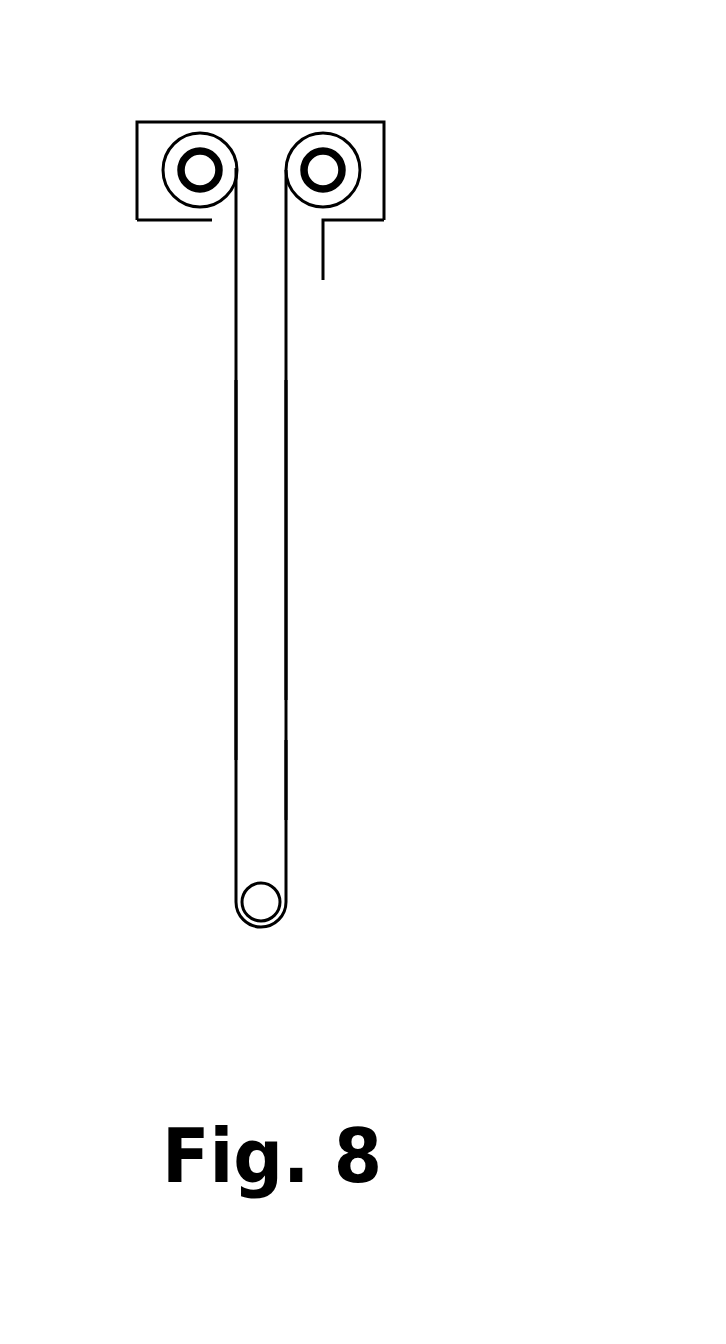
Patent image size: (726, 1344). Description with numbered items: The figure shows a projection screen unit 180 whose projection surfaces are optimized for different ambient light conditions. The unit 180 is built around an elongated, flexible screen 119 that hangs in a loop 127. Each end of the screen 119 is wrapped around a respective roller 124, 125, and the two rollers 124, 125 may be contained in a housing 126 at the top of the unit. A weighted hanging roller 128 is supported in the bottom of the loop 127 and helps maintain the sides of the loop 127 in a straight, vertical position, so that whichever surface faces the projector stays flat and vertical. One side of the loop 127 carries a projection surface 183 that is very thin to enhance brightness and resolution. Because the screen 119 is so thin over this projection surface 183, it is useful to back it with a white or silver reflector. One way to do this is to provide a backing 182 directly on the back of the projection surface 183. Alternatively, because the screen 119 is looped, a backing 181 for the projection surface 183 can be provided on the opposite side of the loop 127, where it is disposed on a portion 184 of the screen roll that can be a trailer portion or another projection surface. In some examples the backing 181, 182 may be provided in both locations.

The screen 119 is at (215, 655).
The roller 124 is at (323, 170).
The roller 125 is at (199, 170).
The housing 126 is at (262, 122).
The loop 127 is at (310, 313).
The weighted hanging roller 128 is at (260, 902).
The unit 180 is at (404, 598).
The backing 181 is at (270, 786).
The backing 182 is at (250, 724).
The projection surface 183 is at (236, 542).
The portion 184 is at (286, 505).